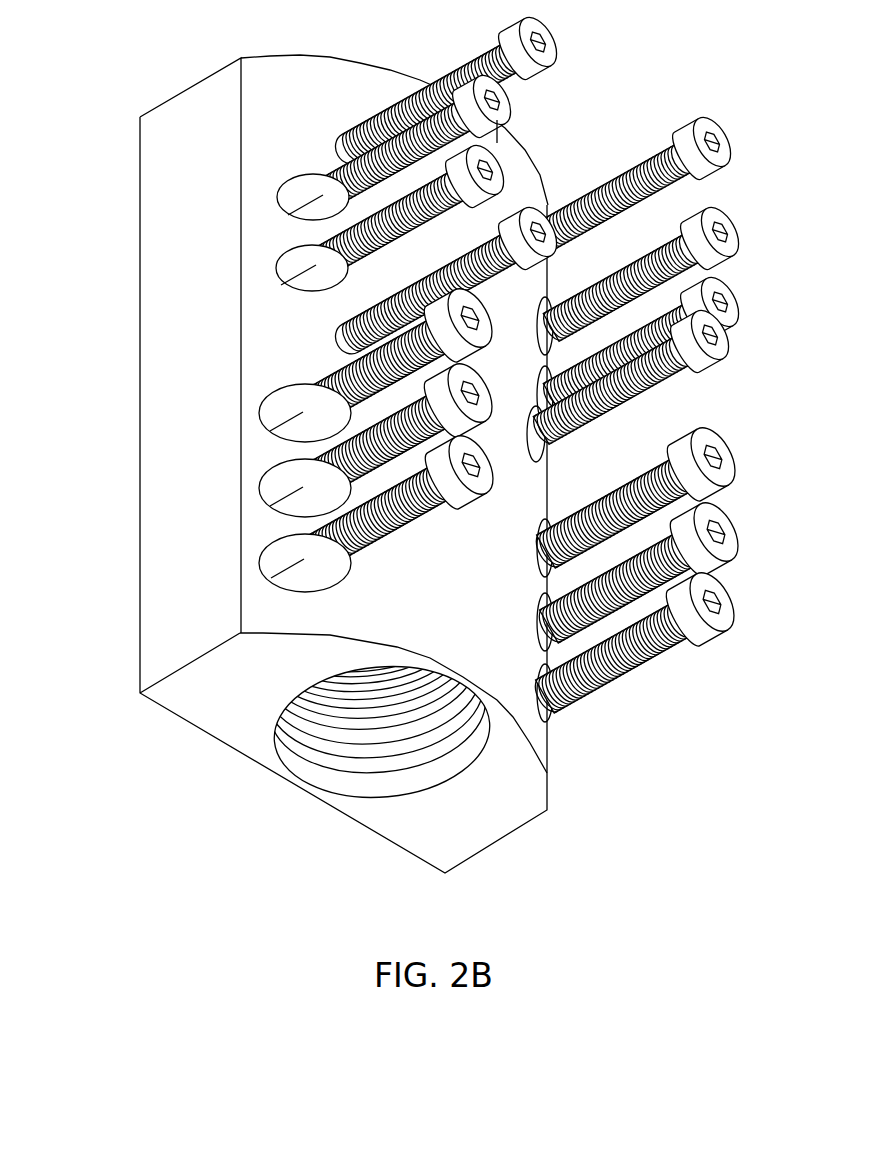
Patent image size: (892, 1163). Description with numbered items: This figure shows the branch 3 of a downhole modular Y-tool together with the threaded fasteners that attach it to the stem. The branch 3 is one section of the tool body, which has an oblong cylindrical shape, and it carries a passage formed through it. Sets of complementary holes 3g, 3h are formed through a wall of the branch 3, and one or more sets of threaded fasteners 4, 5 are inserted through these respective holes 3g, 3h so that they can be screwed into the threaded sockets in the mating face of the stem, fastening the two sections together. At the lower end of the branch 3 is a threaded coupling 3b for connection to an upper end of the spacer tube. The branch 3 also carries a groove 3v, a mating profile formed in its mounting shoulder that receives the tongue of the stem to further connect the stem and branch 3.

The branch 3 is at (140, 426).
The holes 3g is at (293, 197).
The holes 3h is at (267, 562).
The threaded coupling 3b is at (338, 770).
The groove 3v is at (500, 140).
The threaded fasteners 4 is at (687, 122).
The threaded fasteners 5 is at (740, 471).